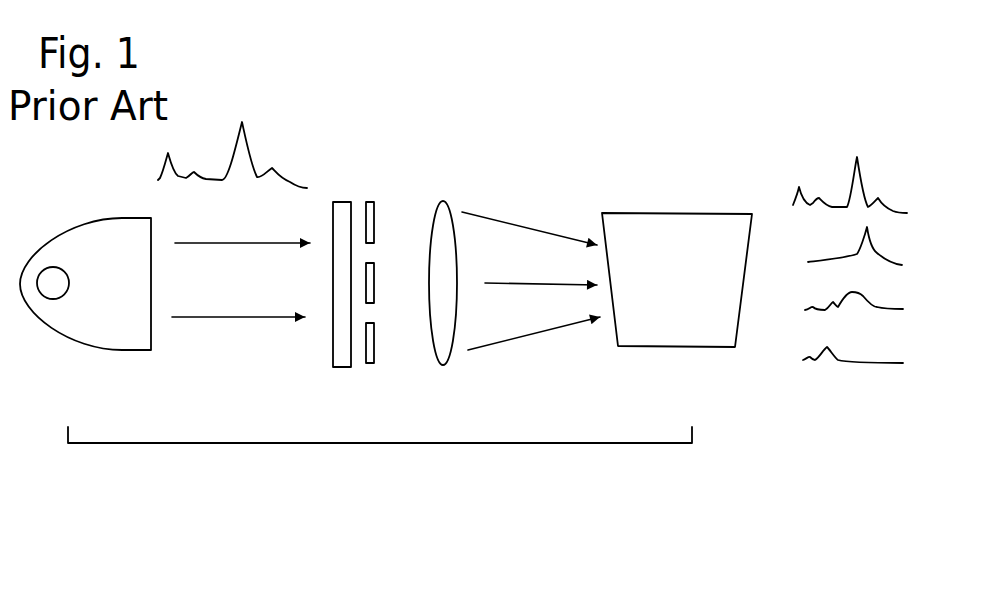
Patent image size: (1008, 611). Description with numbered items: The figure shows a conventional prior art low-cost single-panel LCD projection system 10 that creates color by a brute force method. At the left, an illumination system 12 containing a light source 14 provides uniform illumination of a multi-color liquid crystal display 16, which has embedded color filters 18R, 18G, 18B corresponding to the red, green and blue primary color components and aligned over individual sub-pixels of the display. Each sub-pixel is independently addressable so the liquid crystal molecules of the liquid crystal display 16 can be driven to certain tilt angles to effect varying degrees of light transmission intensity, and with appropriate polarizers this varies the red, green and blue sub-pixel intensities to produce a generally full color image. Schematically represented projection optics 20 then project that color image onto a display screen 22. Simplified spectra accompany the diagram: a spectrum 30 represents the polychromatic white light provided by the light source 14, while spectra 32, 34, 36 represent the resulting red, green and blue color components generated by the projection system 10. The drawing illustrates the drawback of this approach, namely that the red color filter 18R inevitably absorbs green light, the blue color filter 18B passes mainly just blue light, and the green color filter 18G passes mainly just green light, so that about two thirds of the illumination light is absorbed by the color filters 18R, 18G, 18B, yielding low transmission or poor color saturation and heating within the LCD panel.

The single-panel LCD projection system 10 is at (428, 443).
The illumination system 12 is at (116, 366).
The light source 14 is at (52, 299).
The multi-color liquid crystal display 16 is at (346, 384).
The red color filter 18R is at (374, 212).
The green color filter 18G is at (374, 297).
The blue color filter 18B is at (370, 363).
The projection optics 20 is at (442, 364).
The display screen 22 is at (668, 347).
The spectrum 30 is at (247, 153).
The red color component spectrum 32 is at (857, 252).
The green color component spectrum 34 is at (837, 307).
The blue color component spectrum 36 is at (845, 360).